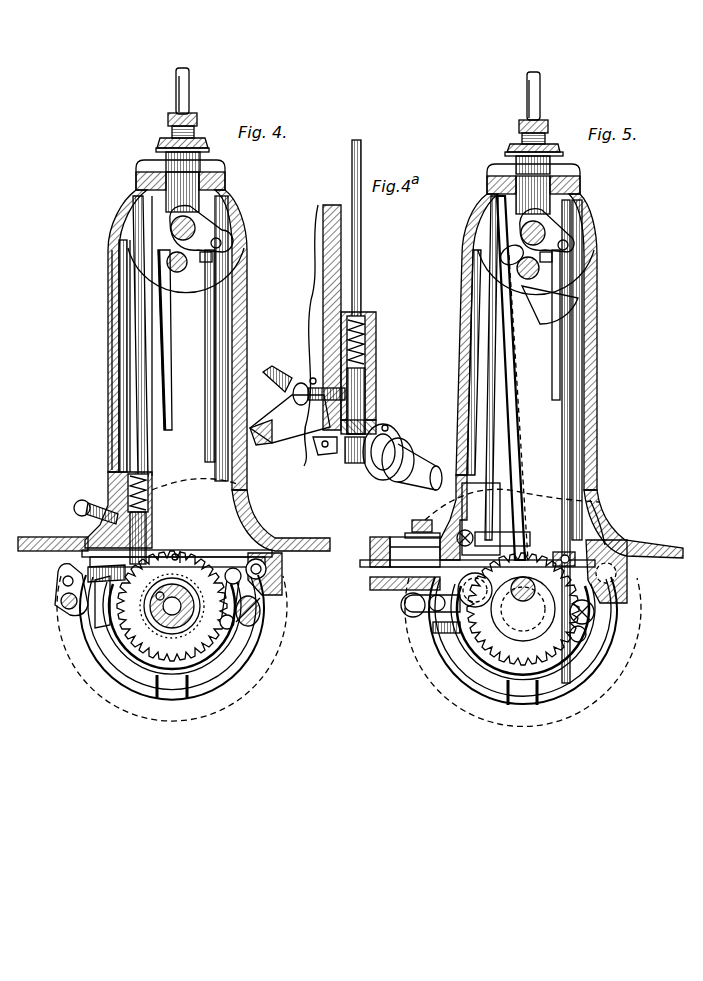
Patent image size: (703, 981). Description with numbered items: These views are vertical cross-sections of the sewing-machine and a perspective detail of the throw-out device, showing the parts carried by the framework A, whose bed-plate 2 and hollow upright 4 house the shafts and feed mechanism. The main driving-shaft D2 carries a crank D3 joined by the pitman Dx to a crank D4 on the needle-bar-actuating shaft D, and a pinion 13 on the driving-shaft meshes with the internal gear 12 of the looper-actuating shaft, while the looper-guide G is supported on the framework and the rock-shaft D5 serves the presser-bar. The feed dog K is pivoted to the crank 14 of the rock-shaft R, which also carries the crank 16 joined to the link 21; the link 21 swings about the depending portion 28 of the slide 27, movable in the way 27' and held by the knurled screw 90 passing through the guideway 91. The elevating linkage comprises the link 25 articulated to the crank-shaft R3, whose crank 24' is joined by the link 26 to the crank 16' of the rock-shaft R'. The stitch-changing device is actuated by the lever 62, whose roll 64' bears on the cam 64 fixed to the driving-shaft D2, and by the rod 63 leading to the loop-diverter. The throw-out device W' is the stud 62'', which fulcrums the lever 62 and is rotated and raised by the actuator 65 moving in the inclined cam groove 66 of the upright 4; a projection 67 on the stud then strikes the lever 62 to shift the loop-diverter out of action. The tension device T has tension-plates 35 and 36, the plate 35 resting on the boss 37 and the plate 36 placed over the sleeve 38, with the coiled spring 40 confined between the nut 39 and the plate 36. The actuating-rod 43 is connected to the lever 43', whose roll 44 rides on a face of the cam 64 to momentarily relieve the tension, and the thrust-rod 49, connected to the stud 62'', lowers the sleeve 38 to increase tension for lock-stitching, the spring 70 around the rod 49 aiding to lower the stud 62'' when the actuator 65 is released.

In FIG. 4, the bed-plate 2 is at (18, 544).
In FIG. 5, the bed-plate 2 is at (650, 560).
In FIG. 4, the hollow upright 4 is at (108, 321).
In FIG. 4A, the hollow upright 4 is at (316, 293).
In FIG. 5, the hollow upright 4 is at (598, 340).
In FIG. 4, the internal gear 12 is at (152, 655).
In FIG. 5, the internal gear 12 is at (498, 655).
In FIG. 4, the pinion 13 is at (172, 606).
In FIG. 4, the crank 14 is at (60, 602).
In FIG. 5, the crank 16 is at (389, 641).
In FIG. 4, the crank 16' is at (267, 541).
In FIG. 4A, the crank 16' is at (276, 506).
In FIG. 5, the crank 16' is at (618, 588).
In FIG. 5, the link 21 is at (437, 612).
In FIG. 4, the crank 24' is at (259, 620).
In FIG. 5, the crank 24' is at (621, 653).
In FIG. 5, the link 25 is at (598, 560).
In FIG. 4, the link 26 is at (262, 592).
In FIG. 5, the link 26 is at (594, 616).
In FIG. 5, the slide 27 is at (474, 597).
In FIG. 5, the way 27' is at (389, 590).
In FIG. 5, the depending portion 28 is at (462, 630).
In FIG. 4, the tension-plate 35 is at (160, 143).
In FIG. 5, the tension-plate 35 is at (552, 157).
In FIG. 4, the tension-plate 36 is at (196, 136).
In FIG. 5, the tension-plate 36 is at (511, 149).
In FIG. 4, the boss 37 is at (200, 165).
In FIG. 5, the boss 37 is at (582, 172).
In FIG. 4, the sleeve 38 is at (175, 110).
In FIG. 5, the sleeve 38 is at (522, 114).
In FIG. 4, the nut 39 is at (191, 114).
In FIG. 5, the nut 39 is at (542, 120).
In FIG. 5, the coiled spring 40 is at (545, 137).
In FIG. 4, the actuating-rod 43 is at (193, 338).
In FIG. 5, the actuating-rod 43 is at (533, 439).
In FIG. 5, the lever 43' is at (512, 497).
In FIG. 5, the roll 44 is at (515, 539).
In FIG. 4, the thrust-rod 49 is at (140, 370).
In FIG. 4A, the thrust-rod 49 is at (362, 240).
In FIG. 5, the thrust-rod 49 is at (494, 394).
In FIG. 4, the actuating-lever 62 is at (144, 562).
In FIG. 4A, the actuating-lever 62 is at (312, 468).
In FIG. 4, the stud 62'' is at (165, 538).
In FIG. 4A, the stud 62'' is at (383, 409).
In FIG. 4, the rod 63 is at (120, 580).
In FIG. 4A, the rod 63 is at (282, 444).
In FIG. 4, the cam 64 is at (202, 631).
In FIG. 4A, the cam 64 is at (399, 446).
In FIG. 4, the roll 64' is at (196, 551).
In FIG. 4A, the roll 64' is at (415, 401).
In FIG. 4, the actuator 65 is at (80, 503).
In FIG. 4A, the actuator 65 is at (296, 386).
In FIG. 5, the actuator 65 is at (466, 528).
In FIG. 4A, the cam groove 66 is at (313, 378).
In FIG. 4, the projection 67 is at (160, 598).
In FIG. 4A, the projection 67 is at (354, 464).
In FIG. 4, the spring 70 is at (146, 478).
In FIG. 4A, the spring 70 is at (376, 340).
In FIG. 5, the screw 90 is at (412, 524).
In FIG. 5, the guideway 91 is at (405, 535).
In FIG. 4, the framework A is at (108, 353).
In FIG. 4A, the framework A is at (428, 302).
In FIG. 5, the framework A is at (460, 300).
In FIG. 4, the needle-bar-actuating shaft D is at (178, 272).
In FIG. 5, the needle-bar-actuating shaft D is at (552, 265).
In FIG. 4, the main driving-shaft D2 is at (172, 648).
In FIG. 4A, the main driving-shaft D2 is at (412, 472).
In FIG. 5, the main driving-shaft D2 is at (523, 652).
In FIG. 5, the crank D3 is at (523, 609).
In FIG. 5, the crank D4 is at (560, 254).
In FIG. 4, the rock-shaft D5 is at (190, 228).
In FIG. 5, the rock-shaft D5 is at (545, 232).
In FIG. 5, the pitman Dx is at (520, 575).
In FIG. 4, the looper-guide G is at (170, 698).
In FIG. 5, the looper-guide G is at (520, 704).
In FIG. 4, the feed dog K is at (58, 577).
In FIG. 4, the rock-shaft R is at (69, 602).
In FIG. 5, the rock-shaft R is at (418, 631).
In FIG. 4, the rock-shaft R' is at (271, 543).
In FIG. 5, the rock-shaft R' is at (635, 571).
In FIG. 4, the crank-shaft R3 is at (262, 611).
In FIG. 4, the tension device T is at (157, 103).
In FIG. 5, the tension device T is at (512, 104).
In FIG. 4, the throw-out device W' is at (196, 491).
In FIG. 4A, the throw-out device W' is at (390, 362).